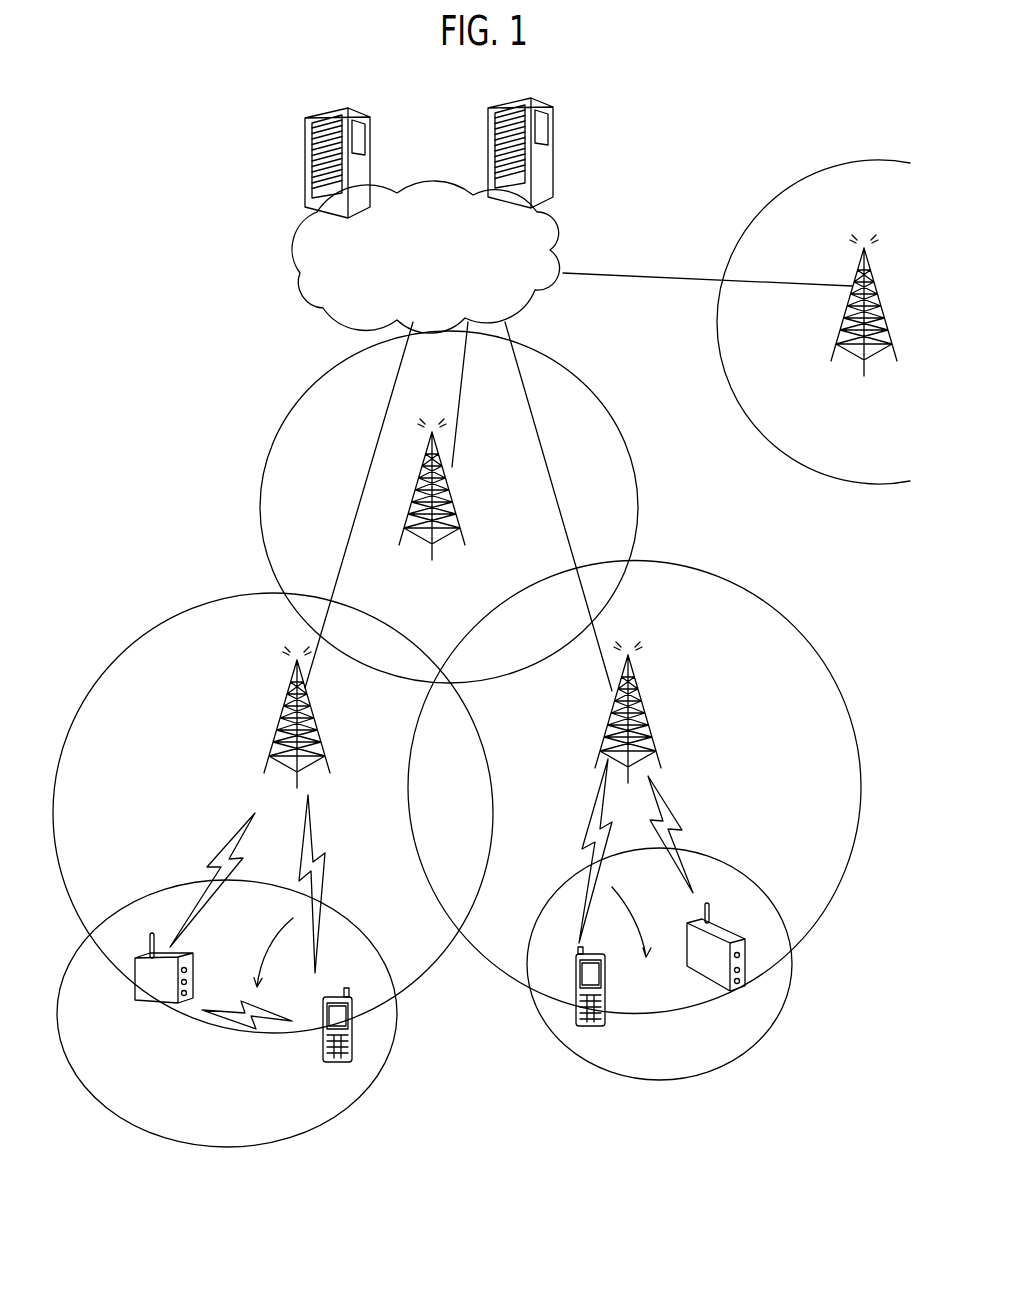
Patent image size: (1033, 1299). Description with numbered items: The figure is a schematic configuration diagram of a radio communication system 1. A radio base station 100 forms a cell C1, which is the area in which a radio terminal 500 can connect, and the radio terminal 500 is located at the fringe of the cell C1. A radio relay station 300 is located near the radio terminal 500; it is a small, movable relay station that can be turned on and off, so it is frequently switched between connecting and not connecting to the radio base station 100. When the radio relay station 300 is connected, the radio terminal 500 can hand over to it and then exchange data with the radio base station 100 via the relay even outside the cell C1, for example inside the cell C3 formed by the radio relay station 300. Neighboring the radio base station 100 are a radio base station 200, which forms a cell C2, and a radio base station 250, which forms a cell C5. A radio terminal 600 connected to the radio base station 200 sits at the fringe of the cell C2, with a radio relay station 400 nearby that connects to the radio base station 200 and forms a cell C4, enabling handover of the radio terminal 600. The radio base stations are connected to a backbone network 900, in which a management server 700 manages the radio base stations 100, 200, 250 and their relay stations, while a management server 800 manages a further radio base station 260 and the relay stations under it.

The radio communication system 1 is at (708, 138).
The radio base station 100 is at (322, 713).
The radio base station 200 is at (644, 695).
The radio base station 250 is at (453, 483).
The radio base station 260 is at (843, 313).
The radio relay station 300 is at (148, 990).
The radio relay station 400 is at (716, 973).
The radio terminal 500 is at (323, 1053).
The radio terminal 600 is at (605, 1020).
The management server 700 is at (370, 140).
The management server 800 is at (553, 130).
The backbone network 900 is at (563, 225).
The cell C1 is at (132, 645).
The cell C2 is at (806, 637).
The cell C3 is at (200, 1150).
The cell C4 is at (792, 960).
The cell C5 is at (622, 437).